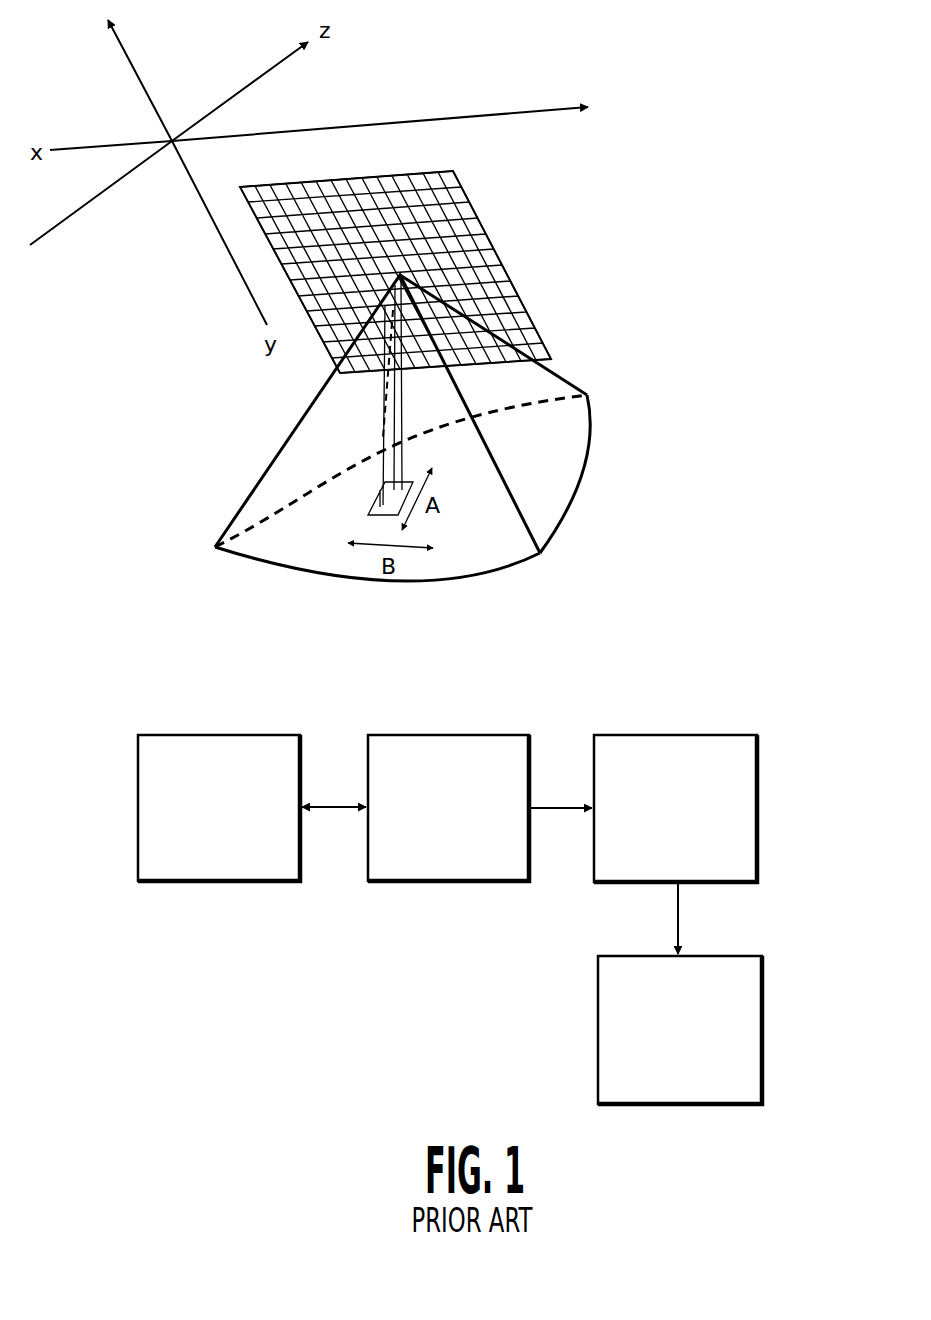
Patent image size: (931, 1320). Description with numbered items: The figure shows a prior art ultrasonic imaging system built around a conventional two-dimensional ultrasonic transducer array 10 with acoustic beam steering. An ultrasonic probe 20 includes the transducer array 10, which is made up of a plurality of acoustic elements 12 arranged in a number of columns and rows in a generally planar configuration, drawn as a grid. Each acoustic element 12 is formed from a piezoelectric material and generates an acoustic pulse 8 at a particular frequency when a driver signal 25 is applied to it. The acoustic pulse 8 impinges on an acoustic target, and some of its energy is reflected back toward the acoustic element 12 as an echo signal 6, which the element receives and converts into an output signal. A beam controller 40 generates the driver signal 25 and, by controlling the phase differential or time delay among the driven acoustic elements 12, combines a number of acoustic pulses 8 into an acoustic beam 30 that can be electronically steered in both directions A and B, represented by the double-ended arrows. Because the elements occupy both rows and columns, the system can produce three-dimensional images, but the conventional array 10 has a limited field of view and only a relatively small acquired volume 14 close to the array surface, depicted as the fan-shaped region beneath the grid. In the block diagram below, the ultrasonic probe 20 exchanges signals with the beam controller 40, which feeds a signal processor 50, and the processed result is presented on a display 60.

The echo signal 6 is at (407, 453).
The acoustic pulse 8 is at (385, 400).
The two-dimensional ultrasonic transducer array 10 is at (532, 222).
The acoustic element 12 is at (523, 320).
The acquired volume 14 is at (557, 497).
The ultrasonic probe 20 is at (258, 735).
The driver signal 25 is at (332, 812).
The acoustic beam 30 is at (360, 460).
The beam controller 40 is at (472, 735).
The signal processor 50 is at (707, 735).
The display 60 is at (597, 1008).